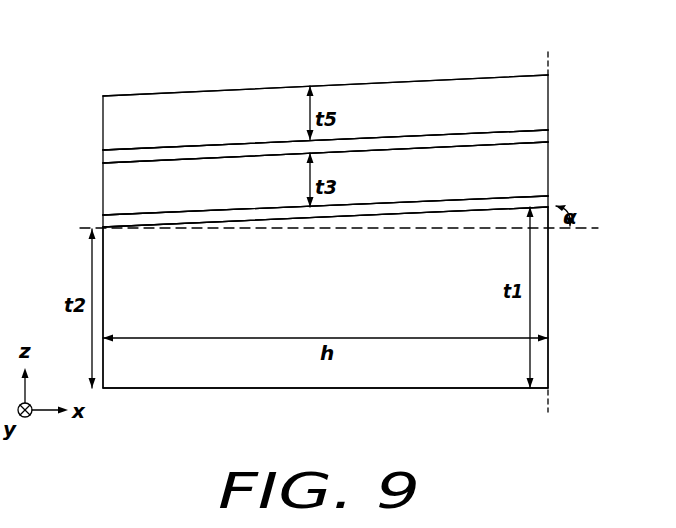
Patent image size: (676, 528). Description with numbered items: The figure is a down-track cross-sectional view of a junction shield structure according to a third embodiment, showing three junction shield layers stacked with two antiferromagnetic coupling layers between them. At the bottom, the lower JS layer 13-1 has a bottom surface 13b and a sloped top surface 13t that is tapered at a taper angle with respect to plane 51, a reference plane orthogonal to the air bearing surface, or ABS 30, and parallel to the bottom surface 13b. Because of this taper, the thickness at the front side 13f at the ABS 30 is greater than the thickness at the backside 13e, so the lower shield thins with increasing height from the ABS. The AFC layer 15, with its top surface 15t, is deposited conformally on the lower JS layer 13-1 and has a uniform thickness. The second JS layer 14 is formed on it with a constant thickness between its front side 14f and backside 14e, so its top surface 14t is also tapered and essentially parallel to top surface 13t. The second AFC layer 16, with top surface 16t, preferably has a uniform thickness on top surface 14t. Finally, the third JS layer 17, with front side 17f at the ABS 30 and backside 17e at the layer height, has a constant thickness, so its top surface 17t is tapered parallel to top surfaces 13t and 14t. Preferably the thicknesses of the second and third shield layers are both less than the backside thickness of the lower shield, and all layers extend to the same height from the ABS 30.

The lower JS layer 13-1 is at (289, 378).
The top surface of lower JS layer 13t is at (415, 211).
The bottom surface of lower JS layer 13b is at (203, 390).
The backside of lower JS layer 13e is at (103, 362).
The front side of lower JS layer 13f is at (548, 283).
The second JS layer 14 is at (198, 172).
The top surface of second JS layer 14t is at (468, 142).
The backside of second JS layer 14e is at (103, 182).
The front side of second JS layer 14f is at (548, 163).
The AFC layer 15 is at (548, 201).
The top surface of AFC layer 15t is at (124, 214).
The second AFC layer 16 is at (548, 134).
The top surface of second AFC layer 16t is at (150, 149).
The third JS layer 17 is at (113, 106).
The top surface of third JS layer 17t is at (359, 85).
The backside of third JS layer 17e is at (103, 136).
The front side of third JS layer 17f is at (548, 97).
The ABS 30 is at (547, 232).
The plane 51 is at (78, 228).